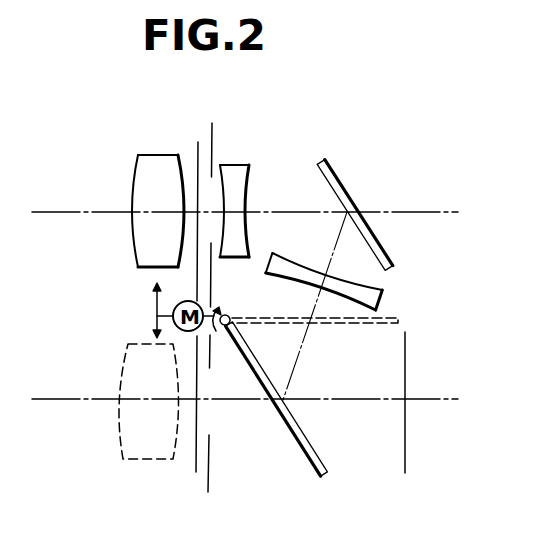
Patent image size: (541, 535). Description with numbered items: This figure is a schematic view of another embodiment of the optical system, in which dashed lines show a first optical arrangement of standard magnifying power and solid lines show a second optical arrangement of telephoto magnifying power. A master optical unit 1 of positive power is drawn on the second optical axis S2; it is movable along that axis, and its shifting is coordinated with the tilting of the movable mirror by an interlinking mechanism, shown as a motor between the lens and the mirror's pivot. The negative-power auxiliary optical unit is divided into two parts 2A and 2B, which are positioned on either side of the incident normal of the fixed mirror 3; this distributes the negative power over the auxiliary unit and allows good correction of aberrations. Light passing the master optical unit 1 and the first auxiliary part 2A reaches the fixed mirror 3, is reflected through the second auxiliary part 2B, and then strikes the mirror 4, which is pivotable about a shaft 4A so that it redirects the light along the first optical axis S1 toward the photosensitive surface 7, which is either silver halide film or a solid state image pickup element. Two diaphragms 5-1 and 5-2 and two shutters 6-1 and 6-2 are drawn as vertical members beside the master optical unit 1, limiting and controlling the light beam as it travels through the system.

The master optical unit 1 is at (145, 264).
The auxiliary optical unit part 2A is at (240, 165).
The auxiliary optical unit part 2B is at (379, 300).
The fixed mirror 3 is at (333, 171).
The pivotable mirror 4 is at (325, 475).
The shaft 4A is at (227, 314).
The diaphragm 5-1 is at (212, 127).
The diaphragm 5-2 is at (208, 474).
The shutter 6-1 is at (197, 152).
The shutter 6-2 is at (196, 458).
The photosensitive surface 7 is at (405, 464).
The first optical axis S1 is at (327, 400).
The second optical axis S2 is at (278, 213).